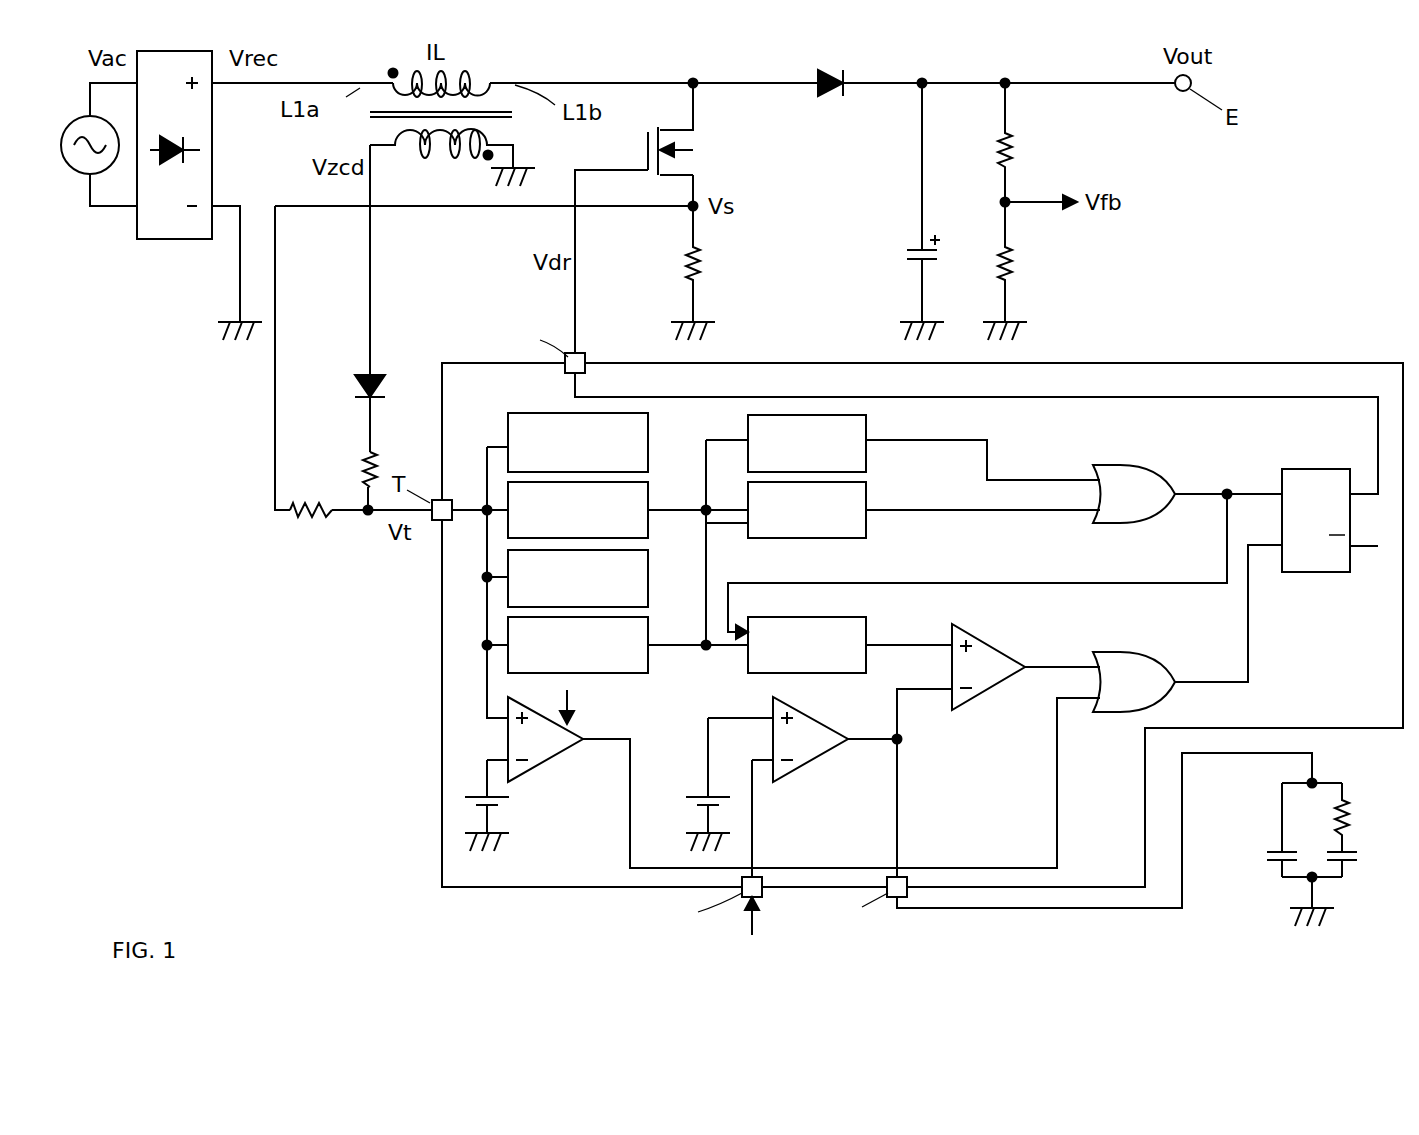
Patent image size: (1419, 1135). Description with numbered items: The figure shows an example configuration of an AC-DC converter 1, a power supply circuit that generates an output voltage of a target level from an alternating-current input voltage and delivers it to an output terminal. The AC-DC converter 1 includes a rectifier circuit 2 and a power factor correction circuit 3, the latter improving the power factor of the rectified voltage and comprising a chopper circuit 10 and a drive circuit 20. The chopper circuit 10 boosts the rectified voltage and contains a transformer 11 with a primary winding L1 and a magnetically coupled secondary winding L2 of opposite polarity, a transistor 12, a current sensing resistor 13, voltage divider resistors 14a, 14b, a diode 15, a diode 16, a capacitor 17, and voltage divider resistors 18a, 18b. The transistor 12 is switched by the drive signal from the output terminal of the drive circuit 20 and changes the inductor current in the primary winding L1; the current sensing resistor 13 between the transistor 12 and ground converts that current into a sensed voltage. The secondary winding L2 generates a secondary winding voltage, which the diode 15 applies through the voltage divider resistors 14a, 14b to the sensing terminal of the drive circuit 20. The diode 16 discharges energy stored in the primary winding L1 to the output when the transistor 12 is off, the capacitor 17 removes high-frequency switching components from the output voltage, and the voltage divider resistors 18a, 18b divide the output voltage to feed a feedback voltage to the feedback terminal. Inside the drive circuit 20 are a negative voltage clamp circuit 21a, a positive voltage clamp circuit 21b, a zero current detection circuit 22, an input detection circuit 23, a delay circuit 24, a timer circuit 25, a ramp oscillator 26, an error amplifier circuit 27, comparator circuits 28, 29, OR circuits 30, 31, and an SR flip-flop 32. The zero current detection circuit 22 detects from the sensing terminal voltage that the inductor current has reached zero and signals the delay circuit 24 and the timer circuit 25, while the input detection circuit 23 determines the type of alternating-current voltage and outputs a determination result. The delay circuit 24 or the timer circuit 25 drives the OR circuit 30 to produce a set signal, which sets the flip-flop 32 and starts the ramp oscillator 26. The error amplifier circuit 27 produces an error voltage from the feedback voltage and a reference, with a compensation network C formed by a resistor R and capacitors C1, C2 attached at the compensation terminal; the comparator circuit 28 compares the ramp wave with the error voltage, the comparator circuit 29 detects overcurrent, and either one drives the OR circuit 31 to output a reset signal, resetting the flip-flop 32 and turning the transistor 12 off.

The AC-DC converter 1 is at (358, 660).
The rectifier circuit 2 is at (175, 240).
The power factor correction circuit 3 is at (1213, 228).
The chopper circuit 10 is at (1142, 137).
The transformer 11 is at (433, 80).
The transistor 12 is at (697, 159).
The current sensing resistor 13 is at (700, 272).
The voltage divider resistor 14a is at (357, 470).
The voltage divider resistor 14b is at (318, 520).
The diode 15 is at (360, 373).
The diode 16 is at (830, 97).
The capacitor 17 is at (905, 258).
The voltage divider resistor 18a is at (1012, 152).
The voltage divider resistor 18b is at (1012, 266).
The drive circuit 20 is at (917, 626).
The negative voltage clamp circuit 21a is at (650, 443).
The positive voltage clamp circuit 21b is at (650, 573).
The zero current detection circuit 22 is at (650, 497).
The input detection circuit 23 is at (650, 630).
The delay circuit 24 is at (868, 497).
The timer circuit 25 is at (868, 430).
The ramp oscillator 26 is at (822, 617).
The error amplifier circuit 27 is at (812, 762).
The comparator circuit 28 is at (990, 690).
The comparator circuit 29 is at (555, 760).
The OR circuit 30 is at (1128, 460).
The OR circuit 31 is at (1130, 652).
The SR flip-flop 32 is at (1323, 574).
The primary winding L1 is at (468, 72).
The secondary winding L2 is at (436, 150).
The compensation network C is at (1311, 853).
The resistor R is at (1347, 815).
The capacitor C1 is at (1350, 860).
The capacitor C2 is at (1277, 860).